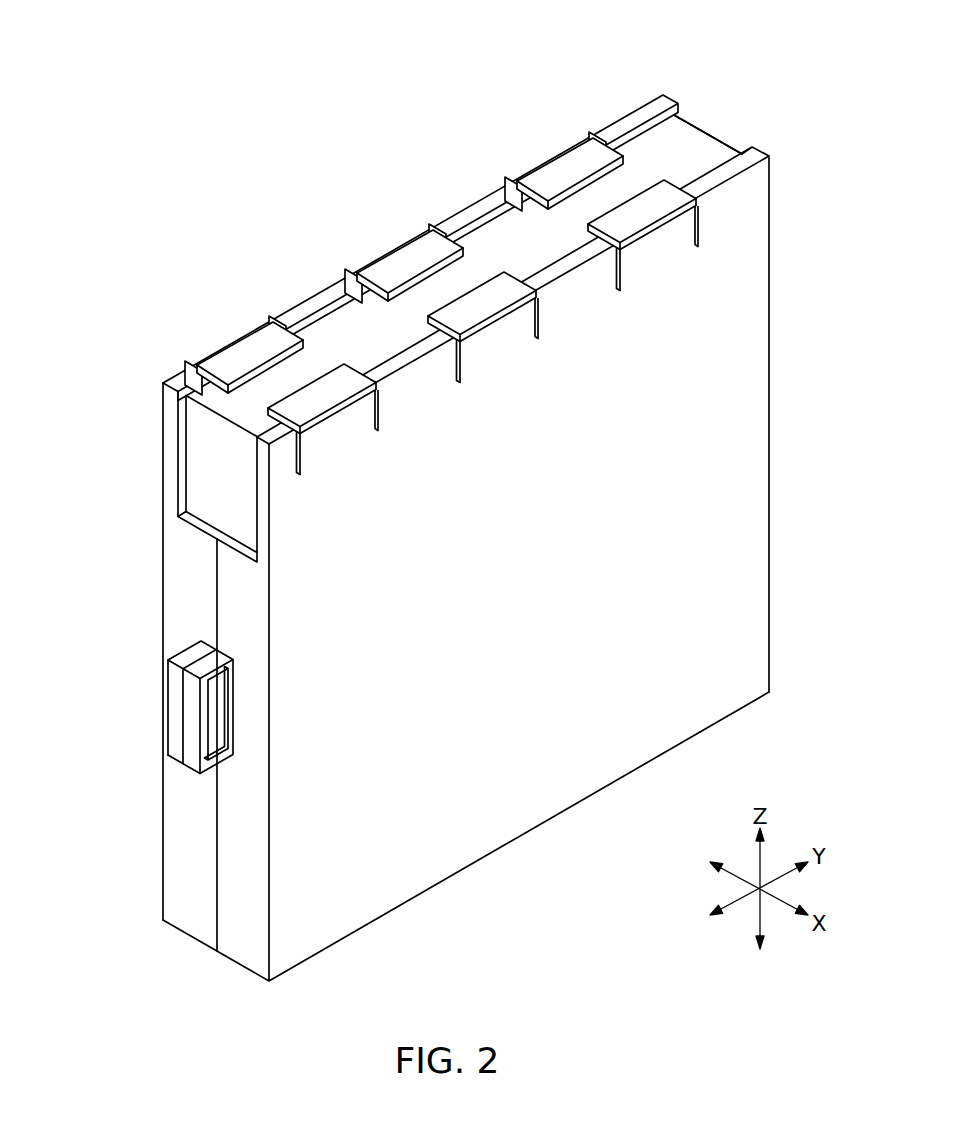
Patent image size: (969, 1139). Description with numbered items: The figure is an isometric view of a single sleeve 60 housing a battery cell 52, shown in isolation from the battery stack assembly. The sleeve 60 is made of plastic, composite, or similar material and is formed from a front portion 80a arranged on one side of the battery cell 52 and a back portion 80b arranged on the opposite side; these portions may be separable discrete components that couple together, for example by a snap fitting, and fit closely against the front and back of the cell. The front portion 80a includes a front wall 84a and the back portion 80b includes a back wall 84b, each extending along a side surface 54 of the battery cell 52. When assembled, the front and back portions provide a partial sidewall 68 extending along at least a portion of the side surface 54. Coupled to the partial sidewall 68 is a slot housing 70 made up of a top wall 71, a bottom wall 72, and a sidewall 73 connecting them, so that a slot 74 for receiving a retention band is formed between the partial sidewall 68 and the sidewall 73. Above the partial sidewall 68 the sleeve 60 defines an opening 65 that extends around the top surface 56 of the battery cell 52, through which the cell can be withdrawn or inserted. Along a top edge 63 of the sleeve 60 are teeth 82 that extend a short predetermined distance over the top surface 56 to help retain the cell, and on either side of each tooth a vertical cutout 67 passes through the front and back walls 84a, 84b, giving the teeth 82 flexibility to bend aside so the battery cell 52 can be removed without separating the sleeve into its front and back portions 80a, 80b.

The battery cell 52 is at (480, 502).
The side surface 54 is at (206, 491).
The top surface 56 is at (507, 251).
The sleeve 60 is at (438, 289).
The top edge 63 is at (473, 203).
The opening 65 is at (639, 86).
The cutout 67 is at (442, 226).
The partial sidewall 68 is at (183, 598).
The slot housing 70 is at (207, 750).
The top wall 71 is at (187, 656).
The bottom wall 72 is at (170, 764).
The sidewall 73 is at (175, 712).
The slot 74 is at (262, 729).
The front portion 80a is at (112, 360).
The back portion 80b is at (775, 678).
The teeth 82 is at (438, 294).
The front wall 84a is at (163, 497).
The back wall 84b is at (769, 292).